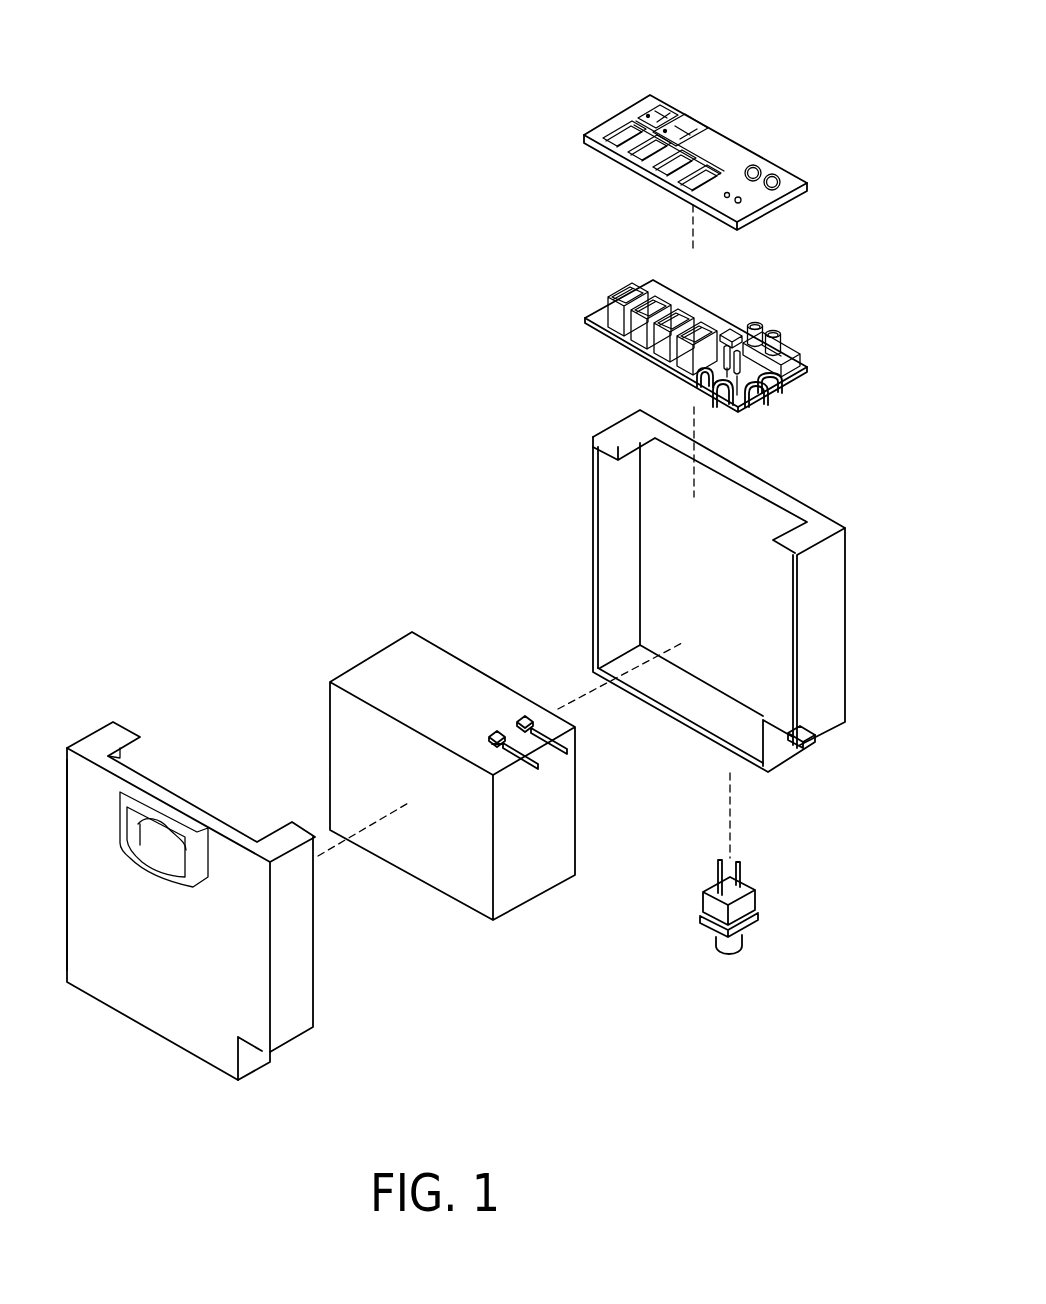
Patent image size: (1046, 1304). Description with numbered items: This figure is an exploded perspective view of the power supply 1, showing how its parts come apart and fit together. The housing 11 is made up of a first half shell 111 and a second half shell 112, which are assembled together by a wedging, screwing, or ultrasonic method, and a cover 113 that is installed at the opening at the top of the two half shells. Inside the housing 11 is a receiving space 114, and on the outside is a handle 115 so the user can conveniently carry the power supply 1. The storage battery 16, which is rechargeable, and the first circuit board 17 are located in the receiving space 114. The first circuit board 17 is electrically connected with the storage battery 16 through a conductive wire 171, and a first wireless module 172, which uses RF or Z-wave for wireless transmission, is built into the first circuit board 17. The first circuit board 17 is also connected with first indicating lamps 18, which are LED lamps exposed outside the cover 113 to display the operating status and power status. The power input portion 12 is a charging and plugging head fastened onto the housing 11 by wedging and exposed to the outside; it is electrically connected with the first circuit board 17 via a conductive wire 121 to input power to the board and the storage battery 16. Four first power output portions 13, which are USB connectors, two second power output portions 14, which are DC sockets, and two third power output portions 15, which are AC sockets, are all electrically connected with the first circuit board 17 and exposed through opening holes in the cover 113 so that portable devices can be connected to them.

The power supply 1 is at (330, 584).
The housing 11 is at (236, 892).
The first half shell 111 is at (172, 1008).
The second half shell 112 is at (695, 617).
The cover 113 is at (733, 152).
The receiving space 114 is at (668, 580).
The handle 115 is at (157, 832).
The power input portion 12 is at (733, 940).
The conductive wire 121 is at (776, 385).
The first power output portions 13 is at (625, 293).
The second power output portions 14 is at (778, 334).
The third power output portions 15 is at (660, 110).
The storage battery 16 is at (528, 872).
The first circuit board 17 is at (598, 318).
The conductive wire 171 is at (697, 378).
The first wireless module 172 is at (733, 332).
The first indicating lamps 18 is at (796, 355).